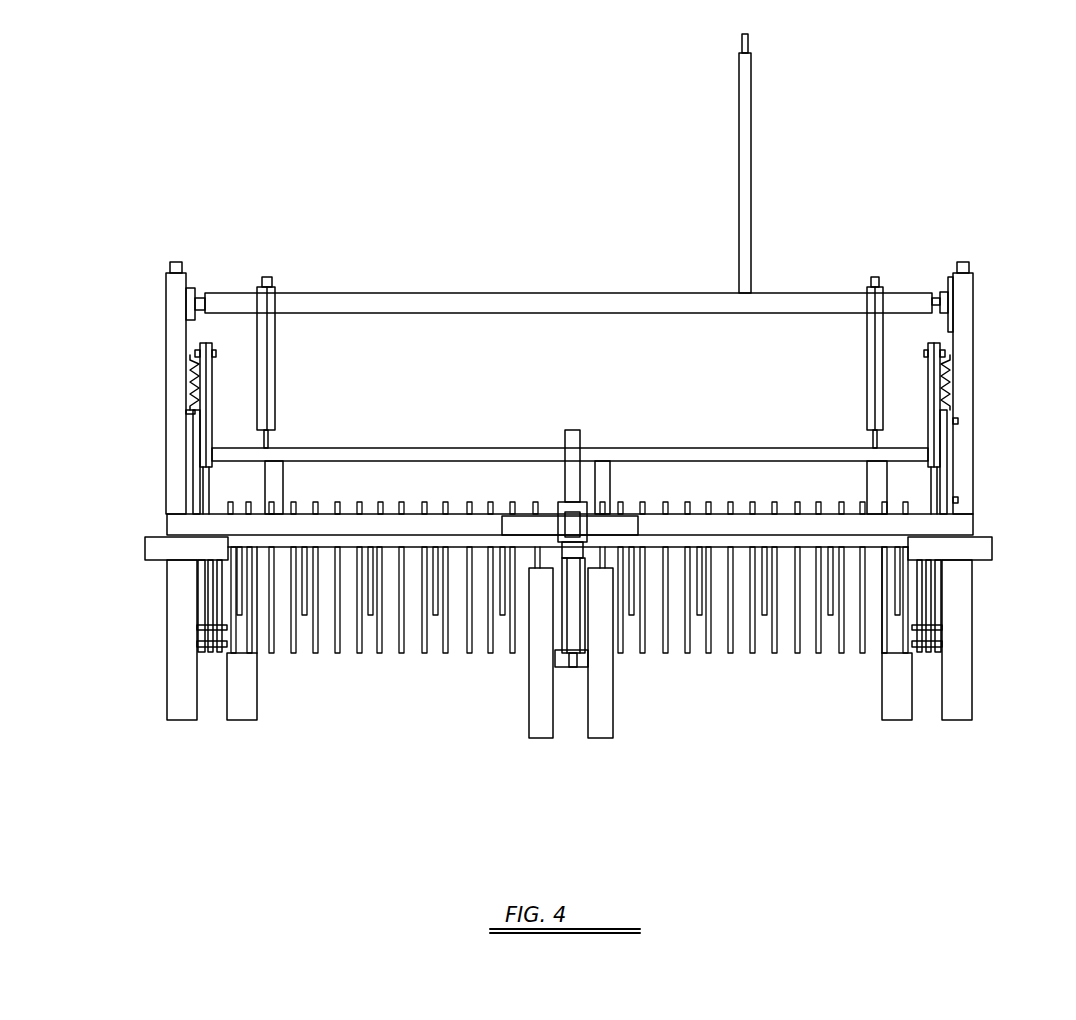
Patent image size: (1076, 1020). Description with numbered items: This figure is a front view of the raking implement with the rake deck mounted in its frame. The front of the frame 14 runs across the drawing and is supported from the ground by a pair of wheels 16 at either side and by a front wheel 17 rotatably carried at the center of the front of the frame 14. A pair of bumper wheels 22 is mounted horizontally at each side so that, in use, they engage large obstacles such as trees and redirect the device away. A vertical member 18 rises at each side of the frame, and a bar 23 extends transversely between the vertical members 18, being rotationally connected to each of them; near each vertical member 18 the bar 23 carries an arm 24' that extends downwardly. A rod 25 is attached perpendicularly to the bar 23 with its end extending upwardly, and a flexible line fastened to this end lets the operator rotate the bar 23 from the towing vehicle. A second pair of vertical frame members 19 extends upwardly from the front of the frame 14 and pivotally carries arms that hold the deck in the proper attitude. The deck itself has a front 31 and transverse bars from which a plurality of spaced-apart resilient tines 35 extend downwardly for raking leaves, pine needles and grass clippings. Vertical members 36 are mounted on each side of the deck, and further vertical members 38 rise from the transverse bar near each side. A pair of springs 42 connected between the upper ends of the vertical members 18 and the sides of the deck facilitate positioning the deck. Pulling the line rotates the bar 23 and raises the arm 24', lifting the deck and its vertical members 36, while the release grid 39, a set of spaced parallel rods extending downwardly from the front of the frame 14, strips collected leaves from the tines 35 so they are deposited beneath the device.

The front of the frame 14 is at (460, 525).
The wheels 16 is at (250, 718).
The front wheel 17 is at (600, 736).
The vertical member 18 is at (184, 310).
The vertical frame members 19 is at (190, 460).
The bumper wheels 22 is at (157, 546).
The bar 23 is at (585, 290).
The arm 24' is at (570, 353).
The rod 25 is at (745, 182).
The front of the deck 31 is at (520, 455).
The resilient tines 35 is at (340, 656).
The vertical members of the deck 36 is at (213, 404).
The vertical members on the transverse bar 38 is at (267, 436).
The release grid 39 is at (435, 616).
The springs 42 is at (196, 362).